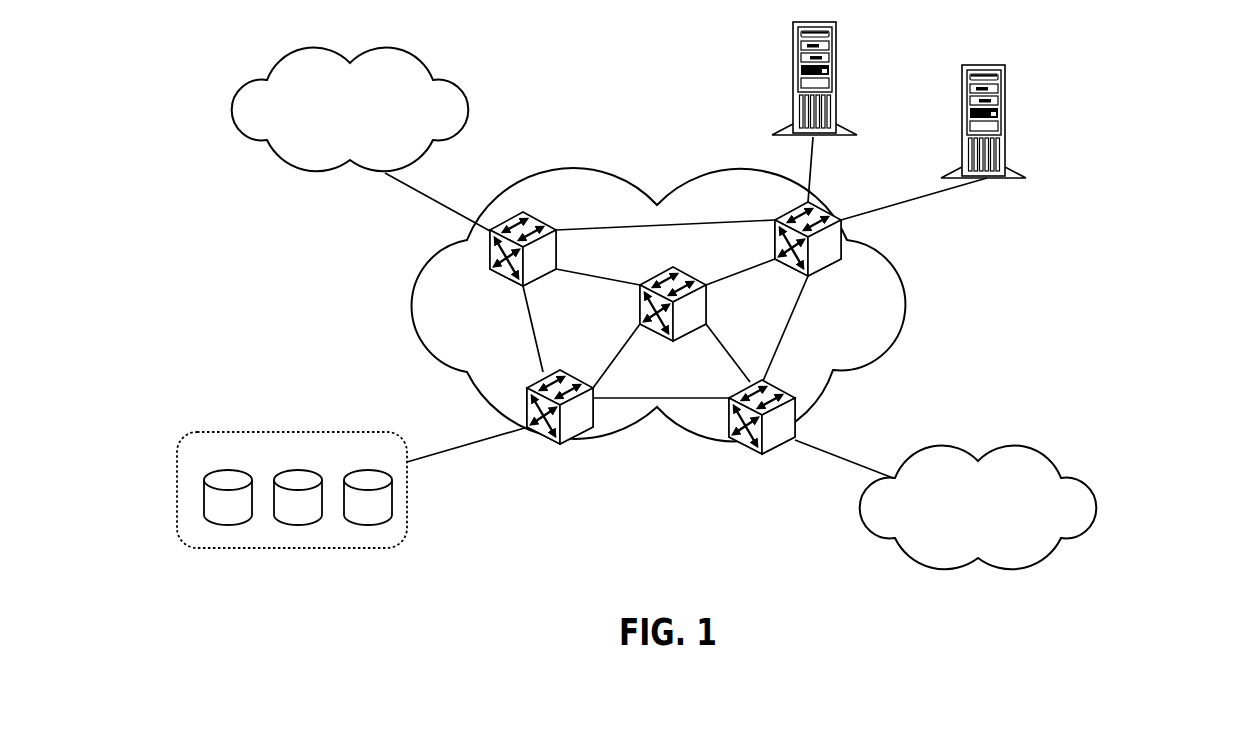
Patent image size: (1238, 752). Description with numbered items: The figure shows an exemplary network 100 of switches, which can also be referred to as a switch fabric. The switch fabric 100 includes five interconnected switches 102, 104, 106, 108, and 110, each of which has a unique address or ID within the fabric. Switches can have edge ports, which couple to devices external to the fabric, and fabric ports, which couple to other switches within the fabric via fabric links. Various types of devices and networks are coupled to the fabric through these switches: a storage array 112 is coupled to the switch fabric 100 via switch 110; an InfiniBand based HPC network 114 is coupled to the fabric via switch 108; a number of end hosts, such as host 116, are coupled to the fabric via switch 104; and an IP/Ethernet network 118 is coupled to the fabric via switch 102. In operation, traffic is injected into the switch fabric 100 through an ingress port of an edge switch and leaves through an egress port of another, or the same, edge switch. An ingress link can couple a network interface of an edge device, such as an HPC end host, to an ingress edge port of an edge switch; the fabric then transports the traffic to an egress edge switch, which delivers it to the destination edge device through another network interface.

The network 100 is at (903, 307).
The switch 102 is at (762, 453).
The switch 104 is at (842, 241).
The switch 106 is at (671, 268).
The switch 108 is at (490, 262).
The switch 110 is at (558, 371).
The storage array 112 is at (385, 548).
The InfiniBand based HPC network 114 is at (232, 110).
The host 116 is at (1028, 173).
The IP/Ethernet network 118 is at (1097, 507).